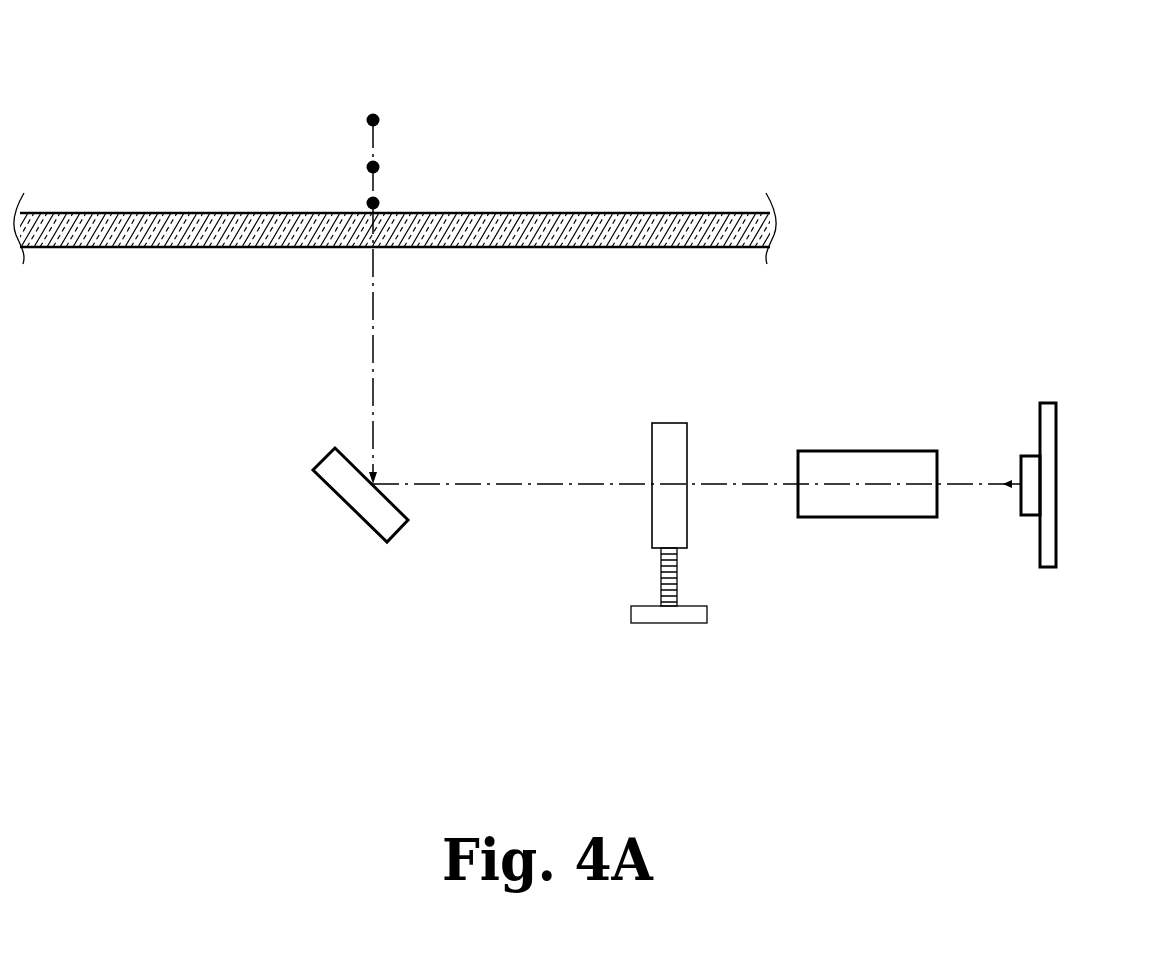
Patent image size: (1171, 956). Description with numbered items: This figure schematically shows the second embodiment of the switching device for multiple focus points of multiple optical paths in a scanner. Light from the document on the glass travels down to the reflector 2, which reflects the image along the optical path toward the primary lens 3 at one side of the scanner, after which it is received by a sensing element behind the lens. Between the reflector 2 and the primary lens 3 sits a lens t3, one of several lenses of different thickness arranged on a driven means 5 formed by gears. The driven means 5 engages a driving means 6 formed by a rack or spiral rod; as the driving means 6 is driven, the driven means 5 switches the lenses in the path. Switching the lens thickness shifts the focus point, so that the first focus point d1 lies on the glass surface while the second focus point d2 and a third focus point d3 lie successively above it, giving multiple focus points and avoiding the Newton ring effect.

The reflector 2 is at (365, 498).
The primary lens 3 is at (863, 467).
The driven means 5 is at (672, 573).
The driving means 6 is at (675, 618).
The lens t3 is at (668, 426).
The first focus point d1 is at (378, 200).
The second focus point d2 is at (368, 165).
The third focus point d3 is at (378, 116).